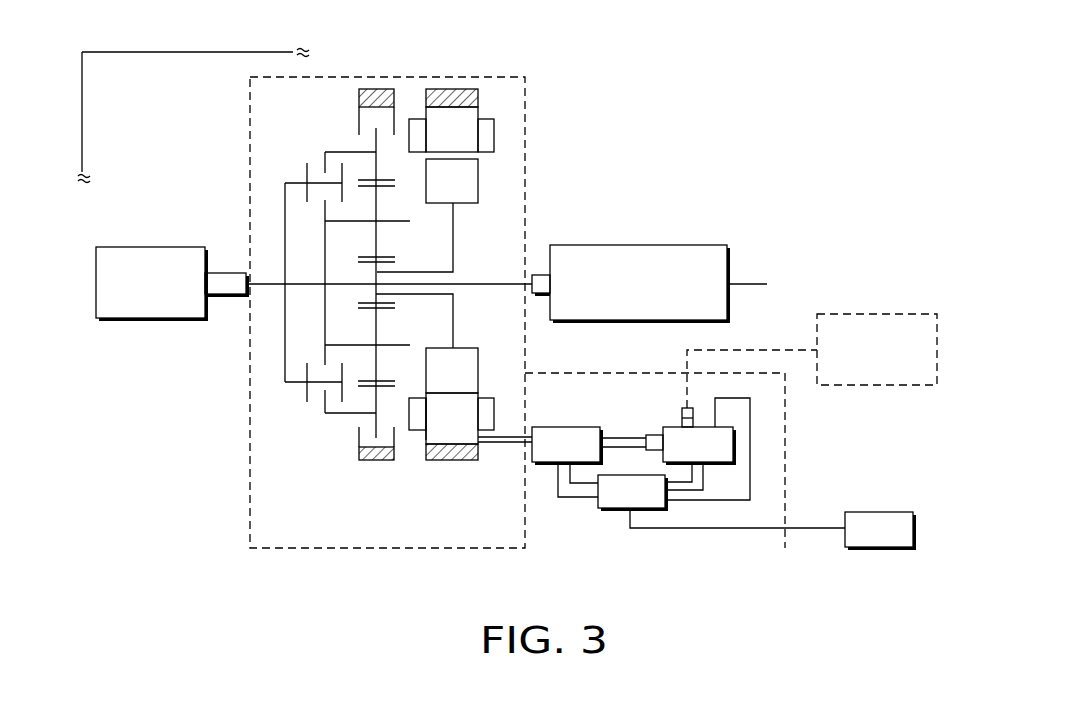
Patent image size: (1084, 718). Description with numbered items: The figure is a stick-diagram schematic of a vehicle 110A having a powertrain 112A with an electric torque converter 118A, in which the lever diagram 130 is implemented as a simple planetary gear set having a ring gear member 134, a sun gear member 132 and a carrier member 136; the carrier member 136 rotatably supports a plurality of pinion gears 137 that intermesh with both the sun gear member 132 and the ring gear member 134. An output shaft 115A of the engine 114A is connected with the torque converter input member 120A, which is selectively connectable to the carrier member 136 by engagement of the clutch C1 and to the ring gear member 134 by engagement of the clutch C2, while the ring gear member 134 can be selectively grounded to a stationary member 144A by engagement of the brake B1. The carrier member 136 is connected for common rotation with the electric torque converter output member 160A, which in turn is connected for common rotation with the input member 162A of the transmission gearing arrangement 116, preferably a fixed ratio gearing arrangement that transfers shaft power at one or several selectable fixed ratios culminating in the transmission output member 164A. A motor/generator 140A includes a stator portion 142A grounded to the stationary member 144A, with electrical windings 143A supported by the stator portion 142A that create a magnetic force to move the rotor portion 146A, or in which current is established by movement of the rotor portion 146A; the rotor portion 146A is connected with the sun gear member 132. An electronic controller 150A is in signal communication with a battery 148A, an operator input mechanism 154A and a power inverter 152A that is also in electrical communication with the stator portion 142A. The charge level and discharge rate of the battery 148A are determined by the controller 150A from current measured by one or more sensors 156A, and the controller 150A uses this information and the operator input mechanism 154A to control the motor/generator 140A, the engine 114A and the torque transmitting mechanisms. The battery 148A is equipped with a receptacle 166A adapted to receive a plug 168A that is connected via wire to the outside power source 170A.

The vehicle 110A is at (190, 52).
The powertrain 112A is at (598, 97).
The engine 114A is at (150, 247).
The output shaft 115A is at (223, 272).
The transmission gearing arrangement 116 is at (663, 245).
The electric torque converter 118A is at (403, 76).
The torque converter input member 120A is at (265, 284).
The lever diagram 130 is at (398, 418).
The sun gear member 132 is at (385, 273).
The ring gear member 134 is at (377, 180).
The carrier member 136 is at (392, 222).
The pinion gears 137 is at (376, 237).
The motor/generator 140A is at (494, 453).
The stator portion 142A is at (428, 440).
The electrical windings 143A is at (525, 401).
The stationary member 144A is at (377, 88).
The rotor portion 146A is at (478, 373).
The battery 148A is at (733, 445).
The electronic controller 150A is at (618, 508).
The power inverter 152A is at (565, 427).
The operator input mechanism 154A is at (878, 547).
The sensors 156A is at (653, 435).
The electric torque converter output member 160A is at (490, 284).
The input member 162A is at (540, 275).
The transmission output member 164A is at (747, 284).
The receptacle 166A is at (680, 423).
The plug 168A is at (683, 408).
The outside power source 170A is at (875, 314).
The brake B1 is at (350, 135).
The clutch C1 is at (315, 208).
The clutch C2 is at (315, 157).